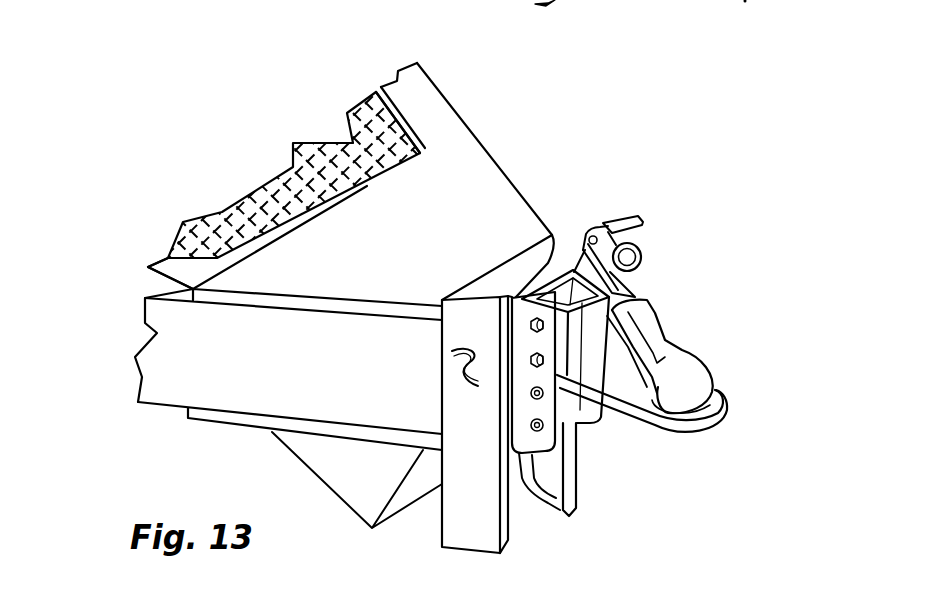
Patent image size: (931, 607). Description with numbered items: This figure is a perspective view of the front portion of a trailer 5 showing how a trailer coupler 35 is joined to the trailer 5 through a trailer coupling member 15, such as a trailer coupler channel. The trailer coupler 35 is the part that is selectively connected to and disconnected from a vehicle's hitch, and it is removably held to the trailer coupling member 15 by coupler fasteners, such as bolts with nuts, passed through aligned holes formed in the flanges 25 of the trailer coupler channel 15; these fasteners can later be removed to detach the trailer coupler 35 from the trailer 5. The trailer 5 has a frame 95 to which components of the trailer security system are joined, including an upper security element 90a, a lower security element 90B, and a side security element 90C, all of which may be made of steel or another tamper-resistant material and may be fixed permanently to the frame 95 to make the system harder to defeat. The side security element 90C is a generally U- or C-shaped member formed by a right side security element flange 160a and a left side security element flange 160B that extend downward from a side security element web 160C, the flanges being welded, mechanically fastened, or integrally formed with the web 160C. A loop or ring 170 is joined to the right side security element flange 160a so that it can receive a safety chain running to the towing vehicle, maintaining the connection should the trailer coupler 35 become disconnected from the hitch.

The trailer 5 is at (350, 90).
The trailer frame 95 is at (443, 118).
The upper security element 90a is at (441, 187).
The lower security element 90B is at (287, 437).
The side security element 90C is at (502, 287).
The right side security element flange 160a is at (480, 525).
The loop or ring 170 is at (440, 384).
The trailer coupling member 15 is at (565, 436).
The left side security element flange 160B is at (568, 460).
The flanges of the trailer coupler channel 25 is at (576, 500).
The trailer coupler 35 is at (660, 310).
The side security element web 160C is at (567, 247).